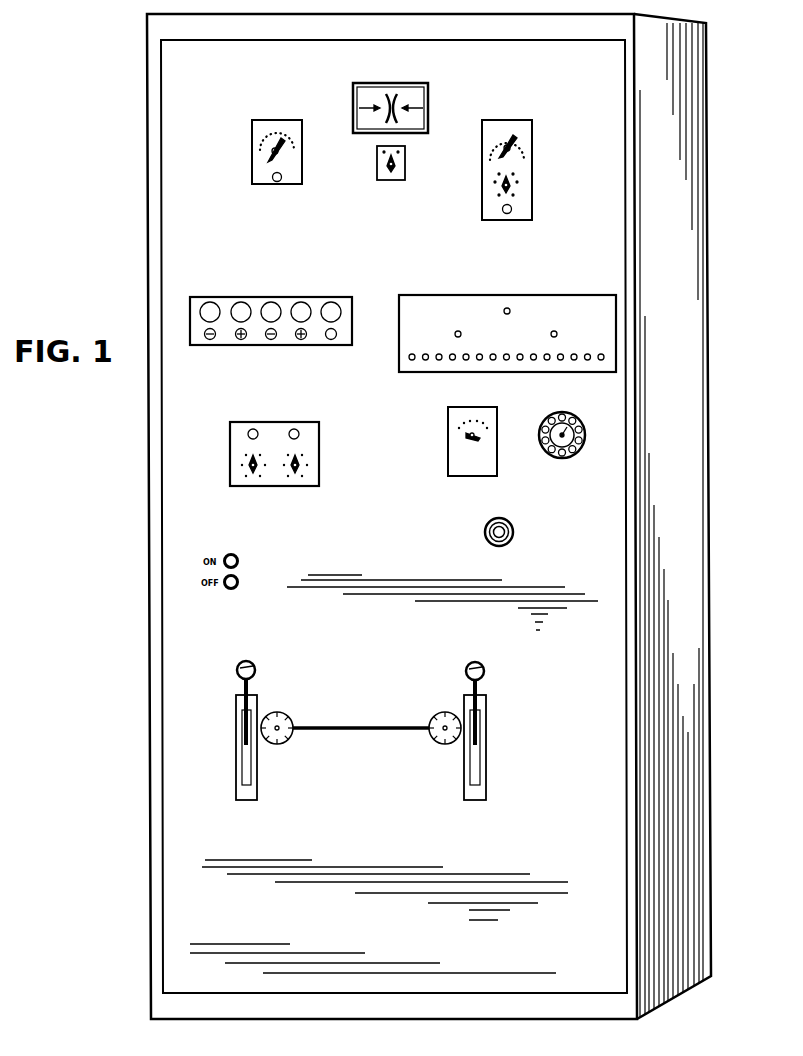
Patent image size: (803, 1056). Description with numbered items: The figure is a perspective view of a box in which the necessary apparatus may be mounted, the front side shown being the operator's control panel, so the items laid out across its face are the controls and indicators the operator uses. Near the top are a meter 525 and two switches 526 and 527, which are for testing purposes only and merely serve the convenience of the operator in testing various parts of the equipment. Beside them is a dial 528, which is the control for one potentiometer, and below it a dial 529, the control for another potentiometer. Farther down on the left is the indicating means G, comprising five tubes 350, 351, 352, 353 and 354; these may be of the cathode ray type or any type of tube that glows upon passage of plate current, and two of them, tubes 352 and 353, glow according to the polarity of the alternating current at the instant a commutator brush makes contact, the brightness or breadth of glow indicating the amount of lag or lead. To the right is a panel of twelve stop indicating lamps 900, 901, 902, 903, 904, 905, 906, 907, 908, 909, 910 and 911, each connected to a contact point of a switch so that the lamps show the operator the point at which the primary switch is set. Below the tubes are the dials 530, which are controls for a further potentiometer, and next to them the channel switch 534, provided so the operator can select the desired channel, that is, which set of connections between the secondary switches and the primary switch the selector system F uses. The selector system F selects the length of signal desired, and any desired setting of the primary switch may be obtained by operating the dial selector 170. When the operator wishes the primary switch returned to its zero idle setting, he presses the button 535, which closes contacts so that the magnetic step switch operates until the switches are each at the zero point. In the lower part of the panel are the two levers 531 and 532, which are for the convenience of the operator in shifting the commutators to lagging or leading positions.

The meter 525 is at (406, 82).
The switch 526 is at (281, 138).
The switch 527 is at (400, 158).
The dial 528 is at (518, 152).
The dial 529 is at (514, 190).
The tube 350 is at (212, 302).
The tube 351 is at (243, 302).
The tube 352 is at (273, 302).
The tube 353 is at (303, 302).
The tube 354 is at (333, 302).
The stop indicating lamp 900 is at (410, 361).
The stop indicating lamp 901 is at (424, 361).
The stop indicating lamp 902 is at (437, 361).
The stop indicating lamp 903 is at (450, 361).
The stop indicating lamp 904 is at (464, 361).
The stop indicating lamp 905 is at (478, 361).
The stop indicating lamp 906 is at (491, 361).
The stop indicating lamp 907 is at (504, 361).
The stop indicating lamp 908 is at (518, 361).
The stop indicating lamp 909 is at (532, 361).
The stop indicating lamp 910 is at (545, 361).
The stop indicating lamp 911 is at (558, 361).
The dials 530 is at (245, 465).
The channel switch 534 is at (466, 432).
The dial selector 170 is at (578, 423).
The button 535 is at (514, 530).
The lever 531 is at (254, 668).
The lever 532 is at (484, 676).
The indicating means G is at (190, 297).
The selector system F is at (585, 431).